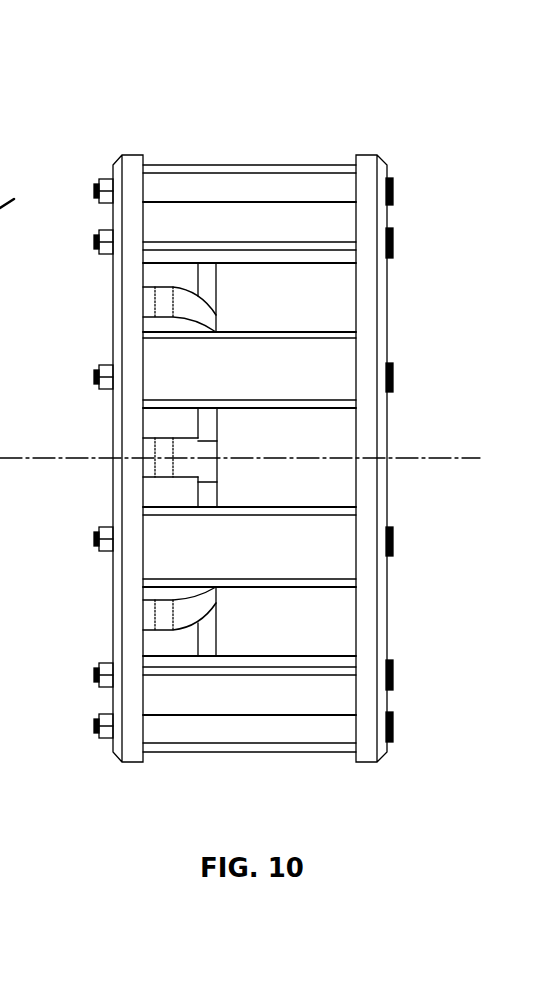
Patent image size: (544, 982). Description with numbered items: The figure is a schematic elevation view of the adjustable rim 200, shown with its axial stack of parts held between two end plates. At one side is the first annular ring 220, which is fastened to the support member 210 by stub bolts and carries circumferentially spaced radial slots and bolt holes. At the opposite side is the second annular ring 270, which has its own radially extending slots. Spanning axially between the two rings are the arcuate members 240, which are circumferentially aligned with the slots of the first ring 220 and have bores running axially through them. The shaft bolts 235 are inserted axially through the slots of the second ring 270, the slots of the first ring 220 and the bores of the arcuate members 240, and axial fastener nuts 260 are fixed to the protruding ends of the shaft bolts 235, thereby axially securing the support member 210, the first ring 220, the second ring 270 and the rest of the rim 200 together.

The adjustable rim 200 is at (446, 94).
The support member 210 is at (217, 309).
The first annular ring 220 is at (133, 762).
The shaft bolts 235 is at (401, 181).
The arcuate members 240 is at (330, 375).
The axial fastener nuts 260 is at (91, 176).
The second annular ring 270 is at (365, 762).